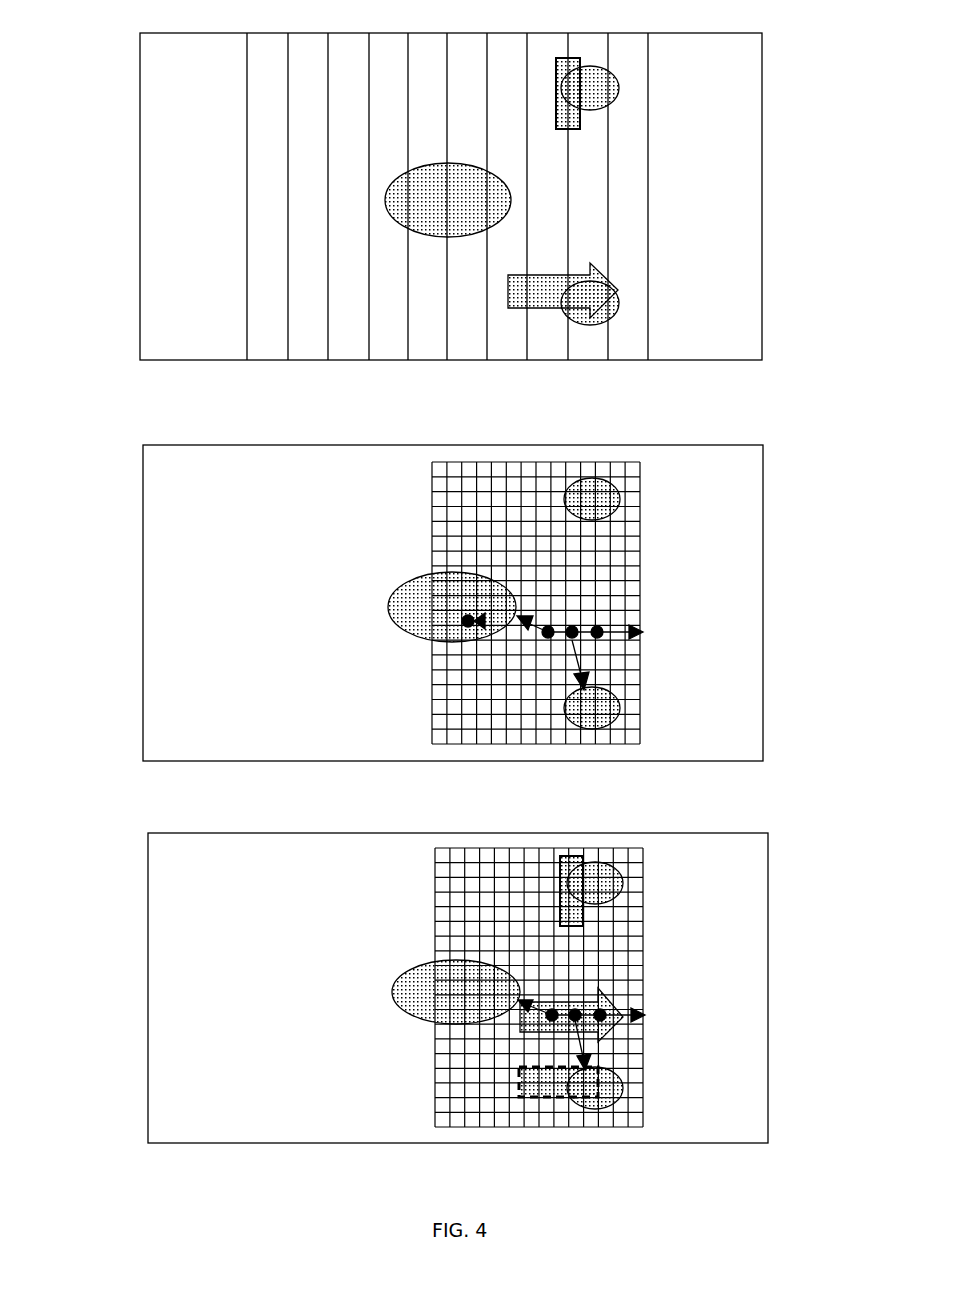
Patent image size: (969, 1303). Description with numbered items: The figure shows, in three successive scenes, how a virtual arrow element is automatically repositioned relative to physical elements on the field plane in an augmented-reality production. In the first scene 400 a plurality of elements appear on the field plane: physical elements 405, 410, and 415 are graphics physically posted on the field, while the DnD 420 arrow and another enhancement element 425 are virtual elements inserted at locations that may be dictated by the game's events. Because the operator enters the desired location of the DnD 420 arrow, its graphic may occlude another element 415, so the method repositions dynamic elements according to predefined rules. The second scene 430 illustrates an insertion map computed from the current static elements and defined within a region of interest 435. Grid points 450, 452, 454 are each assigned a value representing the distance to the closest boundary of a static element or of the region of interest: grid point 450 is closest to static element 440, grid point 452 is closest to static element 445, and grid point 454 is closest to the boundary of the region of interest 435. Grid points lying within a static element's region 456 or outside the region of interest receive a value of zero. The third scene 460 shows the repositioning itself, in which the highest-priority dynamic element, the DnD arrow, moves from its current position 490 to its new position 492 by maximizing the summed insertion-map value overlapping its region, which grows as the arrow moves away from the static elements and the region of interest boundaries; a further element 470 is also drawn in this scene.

The scene 400 is at (392, 196).
The physical element 405 is at (642, 82).
The physical element 410 is at (389, 188).
The physical element 415 is at (647, 315).
The DnD arrow 420 is at (502, 287).
The enhancement element 425 is at (516, 93).
The scene 430 is at (392, 603).
The region of interest 435 is at (472, 603).
The static element 440 is at (410, 592).
The static element 445 is at (622, 705).
The grid point 450 is at (474, 563).
The grid point 452 is at (653, 583).
The grid point 454 is at (666, 606).
The static element's region 456 is at (395, 637).
The scene 460 is at (398, 988).
The large elliptical object 470 is at (396, 977).
The current position 490 is at (630, 1064).
The new position 492 is at (629, 1001).